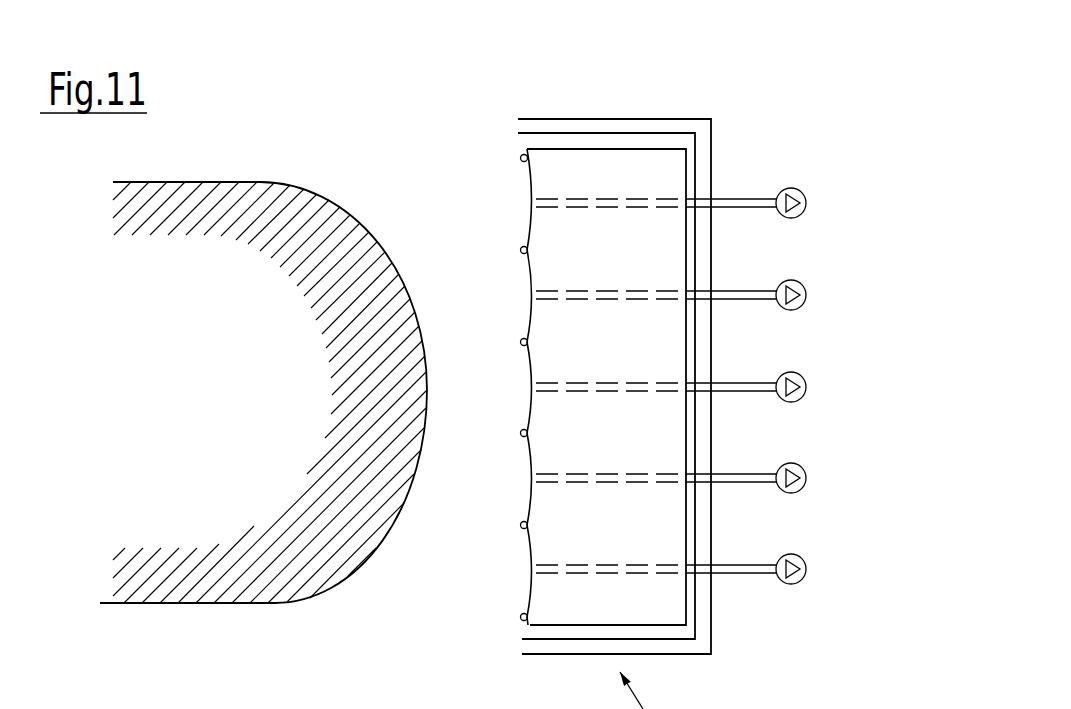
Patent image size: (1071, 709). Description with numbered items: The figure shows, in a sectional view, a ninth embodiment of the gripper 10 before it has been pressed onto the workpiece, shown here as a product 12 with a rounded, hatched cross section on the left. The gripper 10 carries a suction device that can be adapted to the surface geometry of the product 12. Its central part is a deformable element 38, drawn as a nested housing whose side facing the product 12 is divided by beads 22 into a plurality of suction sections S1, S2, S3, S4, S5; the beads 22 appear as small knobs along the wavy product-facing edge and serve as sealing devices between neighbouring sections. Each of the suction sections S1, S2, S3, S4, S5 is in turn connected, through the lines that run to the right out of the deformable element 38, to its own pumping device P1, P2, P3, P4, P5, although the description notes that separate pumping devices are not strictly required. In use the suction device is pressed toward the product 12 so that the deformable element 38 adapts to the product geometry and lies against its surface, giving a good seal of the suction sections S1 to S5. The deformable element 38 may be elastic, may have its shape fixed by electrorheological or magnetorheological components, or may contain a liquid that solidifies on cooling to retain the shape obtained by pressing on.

The gripper 10 is at (685, 95).
The product 12 is at (188, 605).
The beads 22 is at (525, 619).
The deformable element 38 is at (593, 165).
The suction section S1 is at (513, 193).
The suction section S2 is at (515, 285).
The suction section S3 is at (515, 378).
The suction section S4 is at (517, 470).
The suction section S5 is at (517, 560).
The pumping device P1 is at (754, 187).
The pumping device P2 is at (754, 279).
The pumping device P3 is at (754, 371).
The pumping device P4 is at (754, 462).
The pumping device P5 is at (754, 553).